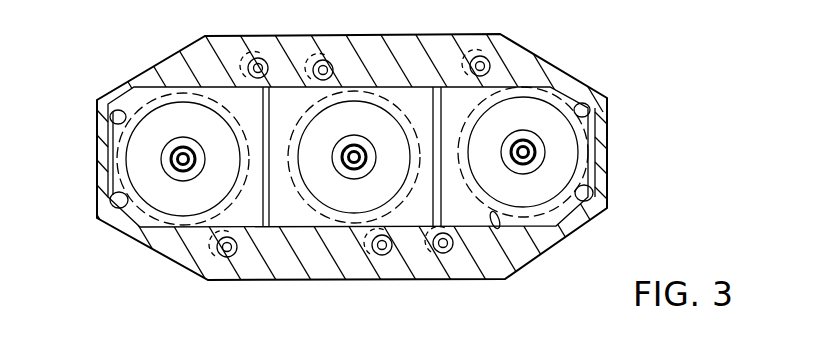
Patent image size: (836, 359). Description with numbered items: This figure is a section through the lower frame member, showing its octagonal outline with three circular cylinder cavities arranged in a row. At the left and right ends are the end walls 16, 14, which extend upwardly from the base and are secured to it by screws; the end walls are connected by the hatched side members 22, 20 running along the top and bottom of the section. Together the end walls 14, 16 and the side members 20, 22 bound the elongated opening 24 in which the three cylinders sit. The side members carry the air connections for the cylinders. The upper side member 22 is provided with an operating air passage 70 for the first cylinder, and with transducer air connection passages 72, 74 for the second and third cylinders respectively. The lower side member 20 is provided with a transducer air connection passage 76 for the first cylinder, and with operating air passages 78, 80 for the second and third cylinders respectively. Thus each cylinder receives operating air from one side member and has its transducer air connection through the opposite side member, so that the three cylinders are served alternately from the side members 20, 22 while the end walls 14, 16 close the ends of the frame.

The end wall 14 is at (598, 153).
The end wall 16 is at (96, 158).
The side member 20 is at (350, 251).
The side member 22 is at (410, 64).
The elongated opening 24 is at (496, 226).
The operating air passage 70 is at (478, 68).
The transducer air connection passage 72 is at (324, 64).
The transducer air connection passage 74 is at (250, 62).
The transducer air connection passage 76 is at (447, 250).
The operating air passage 78 is at (395, 258).
The operating air passage 80 is at (224, 262).